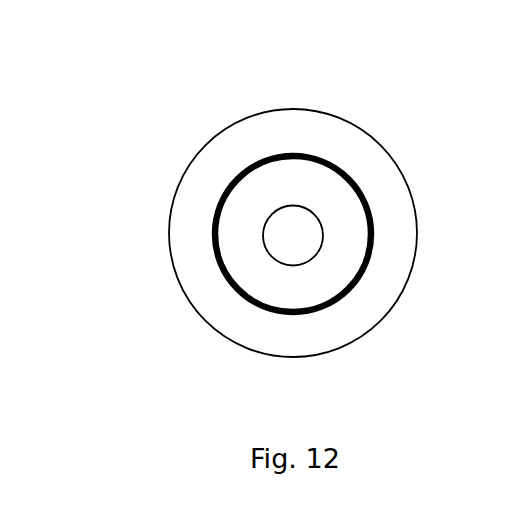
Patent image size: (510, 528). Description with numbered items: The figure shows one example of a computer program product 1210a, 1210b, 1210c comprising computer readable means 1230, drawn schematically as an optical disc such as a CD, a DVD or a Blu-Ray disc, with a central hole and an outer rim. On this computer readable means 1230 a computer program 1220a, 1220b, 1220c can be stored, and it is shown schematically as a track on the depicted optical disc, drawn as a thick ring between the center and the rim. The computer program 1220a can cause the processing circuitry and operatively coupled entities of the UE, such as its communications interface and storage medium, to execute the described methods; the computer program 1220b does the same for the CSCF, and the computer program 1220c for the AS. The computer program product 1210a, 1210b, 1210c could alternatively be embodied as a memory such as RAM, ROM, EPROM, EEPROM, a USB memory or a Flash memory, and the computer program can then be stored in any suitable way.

The computer program product 1210a is at (231, 198).
The computer program product 1210b is at (231, 198).
The computer program product 1210c is at (146, 150).
The computer program 1220a is at (209, 234).
The computer program 1220b is at (209, 234).
The computer program 1220c is at (209, 234).
The computer readable means 1230 is at (250, 337).